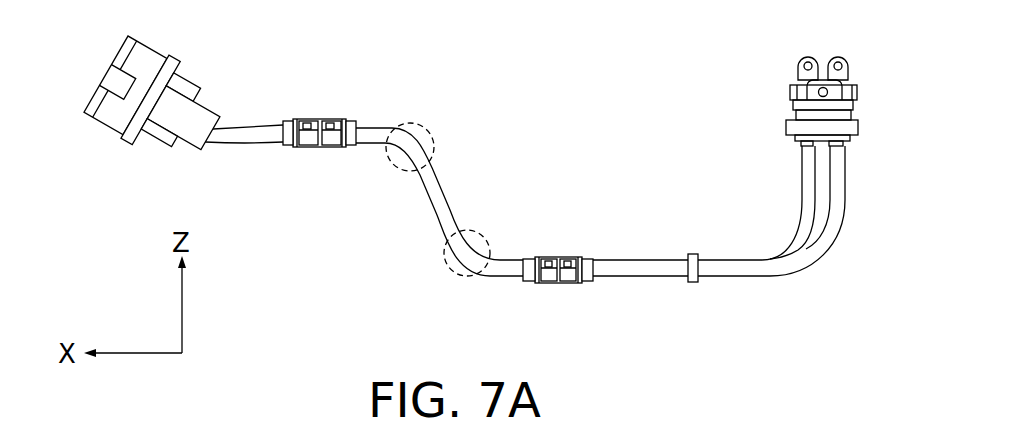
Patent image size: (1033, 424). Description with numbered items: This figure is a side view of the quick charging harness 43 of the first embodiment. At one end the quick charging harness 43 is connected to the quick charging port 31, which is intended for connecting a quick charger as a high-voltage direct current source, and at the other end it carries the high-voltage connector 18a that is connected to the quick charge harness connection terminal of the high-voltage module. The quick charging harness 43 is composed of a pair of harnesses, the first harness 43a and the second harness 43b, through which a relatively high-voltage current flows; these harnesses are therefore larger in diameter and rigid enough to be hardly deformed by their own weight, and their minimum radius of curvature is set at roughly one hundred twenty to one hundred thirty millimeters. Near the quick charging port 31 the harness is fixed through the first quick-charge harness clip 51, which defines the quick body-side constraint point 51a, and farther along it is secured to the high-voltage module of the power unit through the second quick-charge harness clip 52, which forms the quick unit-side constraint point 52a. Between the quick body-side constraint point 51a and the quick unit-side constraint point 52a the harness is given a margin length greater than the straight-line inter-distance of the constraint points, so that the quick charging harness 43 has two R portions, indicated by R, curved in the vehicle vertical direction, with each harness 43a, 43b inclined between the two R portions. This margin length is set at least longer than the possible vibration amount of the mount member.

The high-voltage connector 18a is at (847, 97).
The quick charging port 31 is at (108, 66).
The quick charging harness 43 is at (435, 167).
The first harness 43a is at (792, 202).
The second harness 43b is at (818, 197).
The first quick-charge harness clip 51 is at (312, 119).
The quick body-side constraint point 51a is at (358, 121).
The second quick-charge harness clip 52 is at (565, 257).
The quick unit-side constraint point 52a is at (522, 283).
The R portion R is at (393, 163).